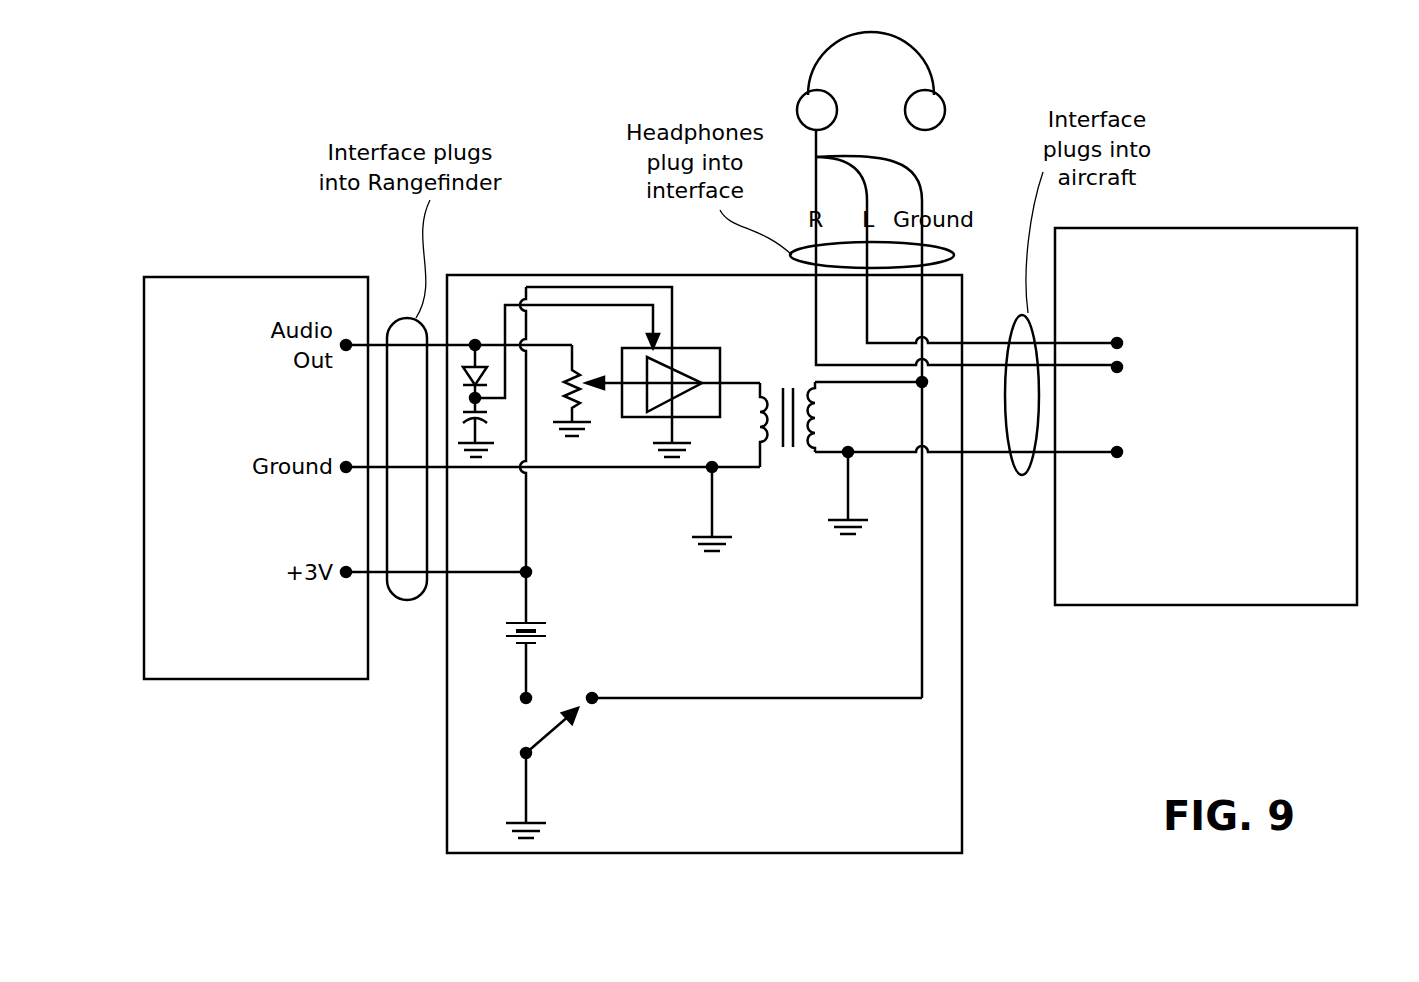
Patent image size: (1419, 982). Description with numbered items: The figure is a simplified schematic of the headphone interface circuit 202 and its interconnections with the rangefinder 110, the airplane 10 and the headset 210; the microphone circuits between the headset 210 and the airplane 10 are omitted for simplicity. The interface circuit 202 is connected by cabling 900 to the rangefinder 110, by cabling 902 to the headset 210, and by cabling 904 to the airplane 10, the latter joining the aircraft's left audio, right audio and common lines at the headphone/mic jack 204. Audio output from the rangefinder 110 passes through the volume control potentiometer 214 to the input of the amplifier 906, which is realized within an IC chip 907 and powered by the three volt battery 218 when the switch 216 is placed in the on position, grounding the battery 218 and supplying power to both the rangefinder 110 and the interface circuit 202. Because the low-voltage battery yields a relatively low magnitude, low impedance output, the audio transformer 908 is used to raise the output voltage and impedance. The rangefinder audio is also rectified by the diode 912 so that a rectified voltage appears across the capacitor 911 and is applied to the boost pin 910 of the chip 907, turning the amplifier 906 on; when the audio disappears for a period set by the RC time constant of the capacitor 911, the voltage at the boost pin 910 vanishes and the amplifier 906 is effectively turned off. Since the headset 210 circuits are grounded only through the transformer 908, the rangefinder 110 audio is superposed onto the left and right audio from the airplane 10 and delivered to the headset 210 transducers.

The airplane 10 is at (1206, 416).
The rangefinder 110 is at (256, 478).
The headphone interface circuit 202 is at (704, 564).
The headphone/mic jack 204 is at (1122, 322).
The headset 210 is at (938, 96).
The volume control potentiometer 214 is at (588, 372).
The power switch 216 is at (537, 742).
The battery 218 is at (548, 630).
The cabling 900 is at (407, 600).
The cabling 902 is at (954, 255).
The cabling 904 is at (1020, 478).
The amplifier 906 is at (690, 376).
The IC chip 907 is at (738, 382).
The audio transformer 908 is at (788, 448).
The boost pin 910 is at (656, 336).
The capacitor 911 is at (492, 414).
The diode 912 is at (464, 380).